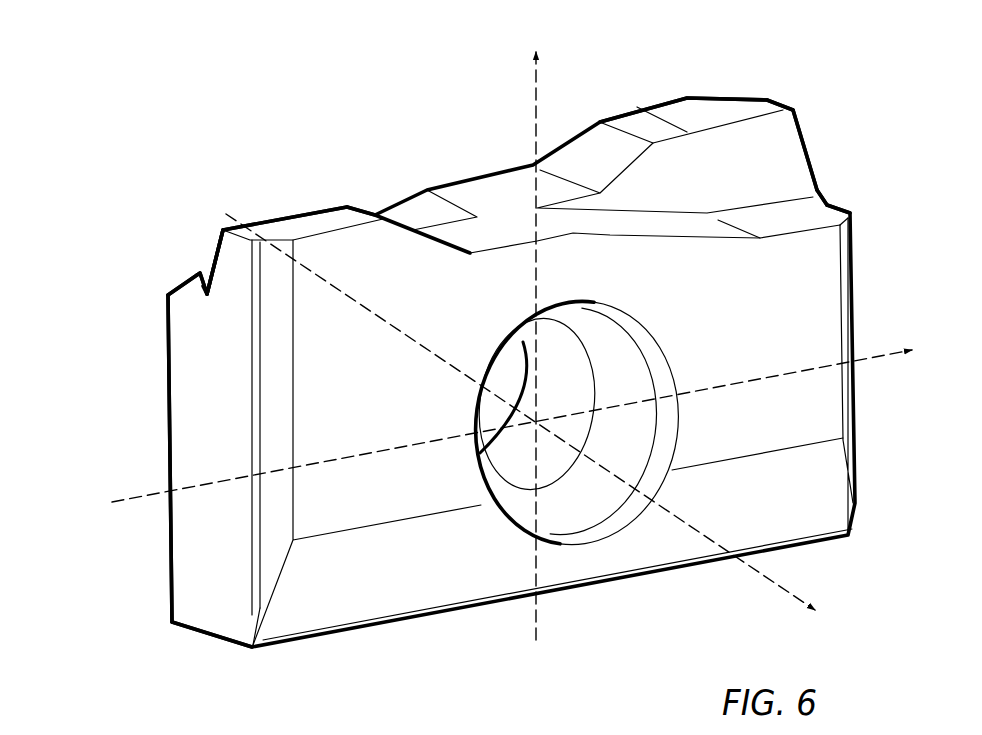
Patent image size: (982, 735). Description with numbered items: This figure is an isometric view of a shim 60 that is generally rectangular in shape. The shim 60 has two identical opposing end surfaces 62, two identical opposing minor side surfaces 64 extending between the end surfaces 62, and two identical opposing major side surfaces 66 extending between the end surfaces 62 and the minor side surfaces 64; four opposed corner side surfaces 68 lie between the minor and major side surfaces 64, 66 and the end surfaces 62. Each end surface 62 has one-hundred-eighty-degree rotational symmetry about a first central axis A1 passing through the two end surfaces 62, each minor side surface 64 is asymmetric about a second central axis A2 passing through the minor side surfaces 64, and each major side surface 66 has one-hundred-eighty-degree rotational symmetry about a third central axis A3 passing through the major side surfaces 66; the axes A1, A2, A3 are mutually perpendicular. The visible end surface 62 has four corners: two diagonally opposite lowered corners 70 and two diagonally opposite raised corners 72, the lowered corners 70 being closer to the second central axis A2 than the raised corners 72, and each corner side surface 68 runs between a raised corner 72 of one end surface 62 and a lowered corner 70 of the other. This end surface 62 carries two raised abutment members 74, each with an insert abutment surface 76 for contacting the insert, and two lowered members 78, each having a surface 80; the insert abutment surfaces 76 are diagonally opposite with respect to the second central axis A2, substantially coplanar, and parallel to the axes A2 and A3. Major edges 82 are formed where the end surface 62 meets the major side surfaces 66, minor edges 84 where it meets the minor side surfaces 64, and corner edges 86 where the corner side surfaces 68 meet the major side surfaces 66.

The shim 60 is at (258, 110).
The end surface 62 is at (530, 190).
The minor side surface 64 is at (202, 447).
The major side surface 66 is at (375, 490).
The corner side surface 68 is at (277, 503).
The lowered corner 70 is at (160, 295).
The raised corner 72 is at (218, 225).
The raised abutment member 74 is at (228, 260).
The insert abutment surface 76 is at (267, 240).
The lowered member 78 is at (180, 299).
The surface 80 is at (193, 298).
The major edge 82 is at (402, 197).
The minor edge 84 is at (202, 287).
The corner edge 86 is at (168, 412).
The first central axis A1 is at (556, 346).
The second central axis A2 is at (512, 426).
The third central axis A3 is at (526, 412).